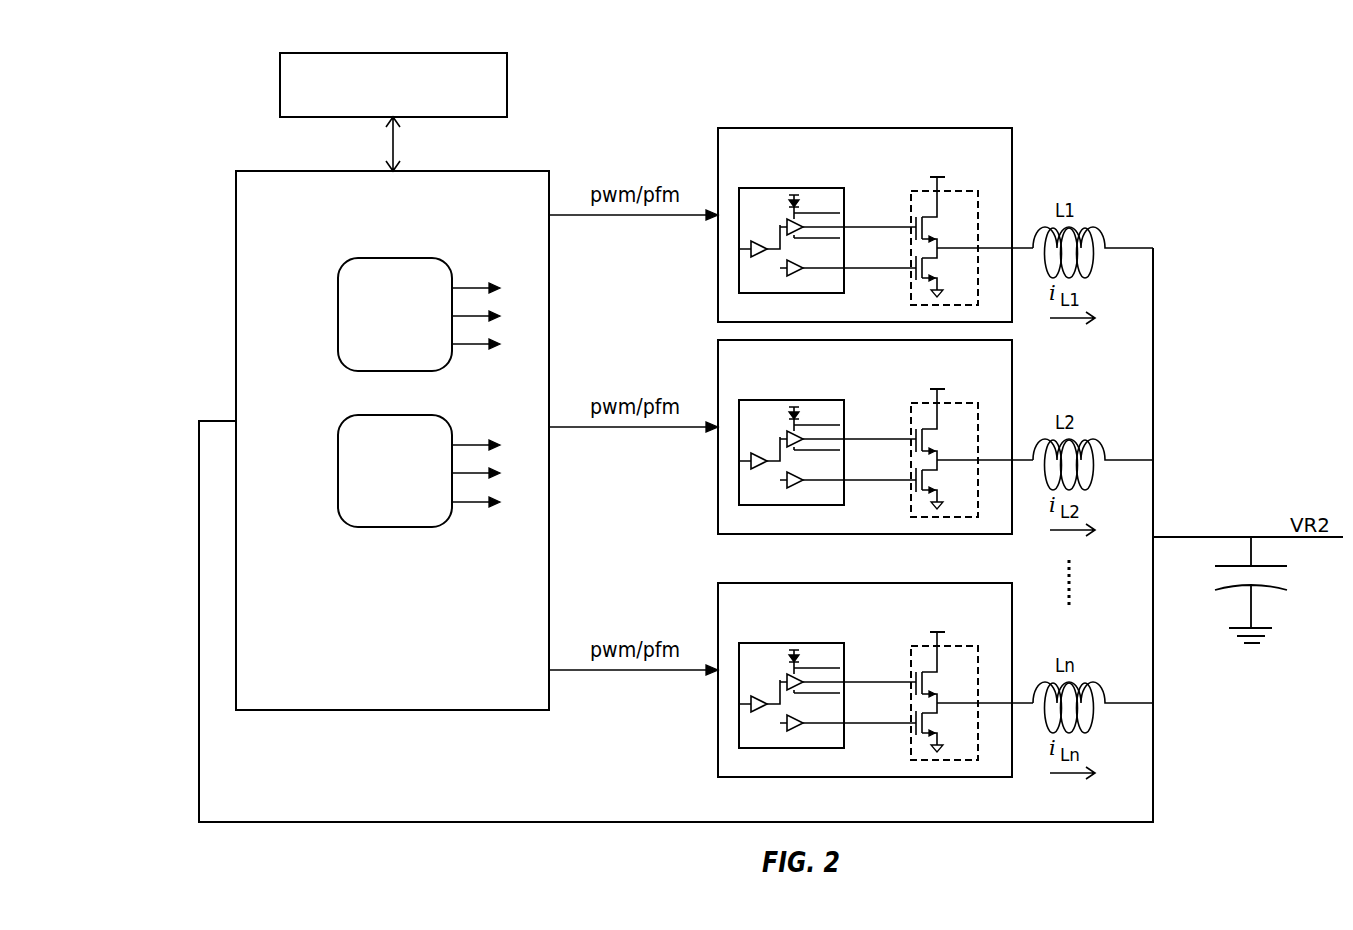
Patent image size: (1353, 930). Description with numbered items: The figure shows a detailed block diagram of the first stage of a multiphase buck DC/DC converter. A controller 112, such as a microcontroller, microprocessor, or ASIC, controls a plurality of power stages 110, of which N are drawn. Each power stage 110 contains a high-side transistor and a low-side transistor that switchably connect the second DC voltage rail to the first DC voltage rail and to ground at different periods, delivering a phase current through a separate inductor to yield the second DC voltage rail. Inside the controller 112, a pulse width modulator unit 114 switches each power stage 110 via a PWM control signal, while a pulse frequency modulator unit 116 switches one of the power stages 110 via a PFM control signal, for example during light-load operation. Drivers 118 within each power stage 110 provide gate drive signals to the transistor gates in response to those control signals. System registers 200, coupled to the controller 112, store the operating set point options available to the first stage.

The registers 200 is at (410, 108).
The controller 112 is at (410, 228).
The pulse width modulator unit 114 is at (410, 346).
The pulse frequency modulator unit 116 is at (410, 503).
The power stage 110 is at (875, 452).
The driver 118 is at (789, 453).